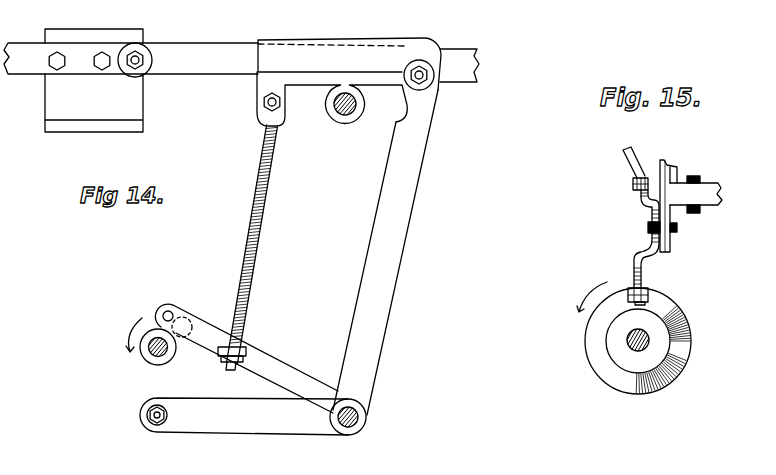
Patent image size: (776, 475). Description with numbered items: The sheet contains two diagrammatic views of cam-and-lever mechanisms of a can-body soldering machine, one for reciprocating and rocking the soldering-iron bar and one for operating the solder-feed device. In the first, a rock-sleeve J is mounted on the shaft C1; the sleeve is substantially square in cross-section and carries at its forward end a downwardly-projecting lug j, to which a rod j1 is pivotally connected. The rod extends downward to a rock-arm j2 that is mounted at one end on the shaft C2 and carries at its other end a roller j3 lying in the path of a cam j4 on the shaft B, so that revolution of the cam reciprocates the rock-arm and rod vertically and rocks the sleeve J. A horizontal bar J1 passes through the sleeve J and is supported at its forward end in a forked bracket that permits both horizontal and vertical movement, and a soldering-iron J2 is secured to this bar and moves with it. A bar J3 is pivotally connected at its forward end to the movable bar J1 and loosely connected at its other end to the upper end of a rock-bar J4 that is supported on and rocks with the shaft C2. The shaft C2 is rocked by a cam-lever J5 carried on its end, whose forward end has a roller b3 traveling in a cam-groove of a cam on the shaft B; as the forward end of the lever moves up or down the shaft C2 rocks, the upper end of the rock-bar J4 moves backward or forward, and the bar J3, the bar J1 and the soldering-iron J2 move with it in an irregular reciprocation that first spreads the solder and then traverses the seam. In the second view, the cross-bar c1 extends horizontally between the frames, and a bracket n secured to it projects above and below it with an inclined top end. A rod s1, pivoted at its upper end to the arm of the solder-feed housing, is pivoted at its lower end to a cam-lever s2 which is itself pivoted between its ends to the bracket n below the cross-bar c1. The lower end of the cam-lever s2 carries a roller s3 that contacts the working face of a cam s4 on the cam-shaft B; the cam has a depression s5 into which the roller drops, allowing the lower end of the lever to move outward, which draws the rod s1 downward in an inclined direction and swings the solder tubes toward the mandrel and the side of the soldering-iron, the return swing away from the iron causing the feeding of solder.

In FIG. 14, the horizontal bar J1 is at (23, 60).
In FIG. 14, the soldering-iron J2 is at (98, 80).
In FIG. 14, the rock-sleeve J is at (378, 58).
In FIG. 14, the bar J3 is at (318, 57).
In FIG. 14, the lug j is at (258, 96).
In FIG. 14, the shaft C1 is at (340, 118).
In FIG. 14, the rock-bar J4 is at (374, 222).
In FIG. 14, the rod j1 is at (258, 200).
In FIG. 14, the rock-arm j2 is at (280, 376).
In FIG. 14, the roller j3 is at (165, 303).
In FIG. 14, the shaft B is at (158, 362).
In FIG. 15, the shaft B is at (626, 338).
In FIG. 14, the cam j4 is at (174, 338).
In FIG. 14, the cam-lever J5 is at (244, 416).
In FIG. 14, the roller b3 is at (168, 415).
In FIG. 14, the shaft C2 is at (366, 417).
In FIG. 15, the rod s1 is at (632, 152).
In FIG. 15, the cam-lever s2 is at (642, 206).
In FIG. 15, the bracket n is at (668, 242).
In FIG. 15, the cross-bar c1 is at (710, 188).
In FIG. 15, the roller s3 is at (650, 289).
In FIG. 15, the depression s5 is at (680, 352).
In FIG. 15, the cam s4 is at (613, 369).